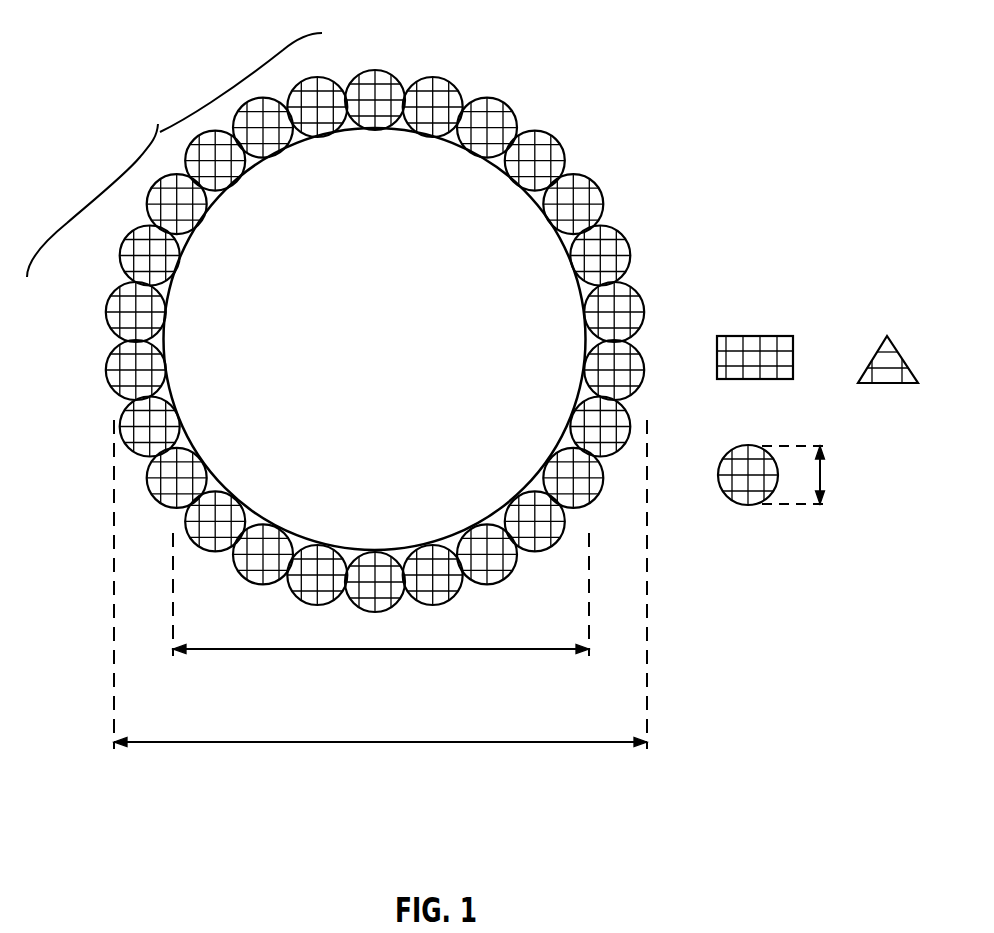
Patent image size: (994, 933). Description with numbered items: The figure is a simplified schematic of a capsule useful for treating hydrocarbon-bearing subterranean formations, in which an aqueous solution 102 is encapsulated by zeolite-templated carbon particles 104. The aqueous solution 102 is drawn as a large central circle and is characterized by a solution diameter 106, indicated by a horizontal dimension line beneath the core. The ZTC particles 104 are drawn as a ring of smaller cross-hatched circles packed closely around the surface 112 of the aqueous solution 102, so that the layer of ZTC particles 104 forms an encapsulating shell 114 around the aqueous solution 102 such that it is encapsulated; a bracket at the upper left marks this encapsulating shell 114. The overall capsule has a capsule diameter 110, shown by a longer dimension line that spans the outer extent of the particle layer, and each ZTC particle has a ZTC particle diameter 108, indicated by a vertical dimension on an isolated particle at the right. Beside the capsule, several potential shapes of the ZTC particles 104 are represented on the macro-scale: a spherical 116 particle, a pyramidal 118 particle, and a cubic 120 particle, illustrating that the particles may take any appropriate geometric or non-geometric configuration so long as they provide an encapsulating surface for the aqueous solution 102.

The aqueous solution 102 is at (397, 353).
The zeolite-templated carbon particles 104 is at (543, 150).
The solution diameter 106 is at (380, 650).
The ZTC particle diameter 108 is at (822, 477).
The capsule diameter 110 is at (380, 743).
The surface 112 is at (550, 207).
The encapsulating shell 114 is at (174, 155).
The spherical 116 is at (743, 505).
The pyramidal 118 is at (887, 336).
The cubic 120 is at (748, 336).